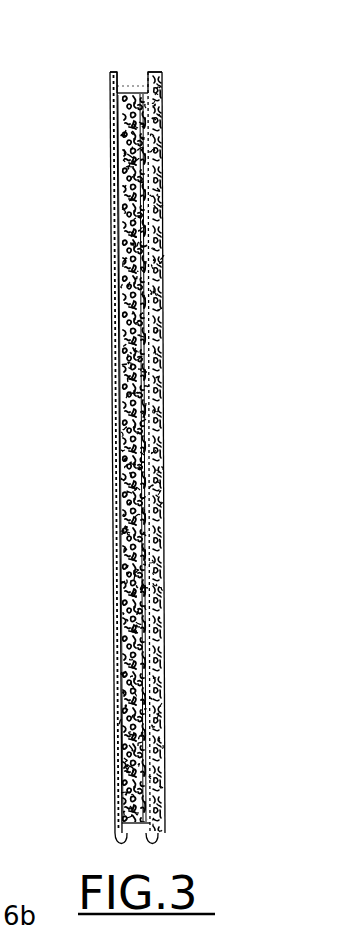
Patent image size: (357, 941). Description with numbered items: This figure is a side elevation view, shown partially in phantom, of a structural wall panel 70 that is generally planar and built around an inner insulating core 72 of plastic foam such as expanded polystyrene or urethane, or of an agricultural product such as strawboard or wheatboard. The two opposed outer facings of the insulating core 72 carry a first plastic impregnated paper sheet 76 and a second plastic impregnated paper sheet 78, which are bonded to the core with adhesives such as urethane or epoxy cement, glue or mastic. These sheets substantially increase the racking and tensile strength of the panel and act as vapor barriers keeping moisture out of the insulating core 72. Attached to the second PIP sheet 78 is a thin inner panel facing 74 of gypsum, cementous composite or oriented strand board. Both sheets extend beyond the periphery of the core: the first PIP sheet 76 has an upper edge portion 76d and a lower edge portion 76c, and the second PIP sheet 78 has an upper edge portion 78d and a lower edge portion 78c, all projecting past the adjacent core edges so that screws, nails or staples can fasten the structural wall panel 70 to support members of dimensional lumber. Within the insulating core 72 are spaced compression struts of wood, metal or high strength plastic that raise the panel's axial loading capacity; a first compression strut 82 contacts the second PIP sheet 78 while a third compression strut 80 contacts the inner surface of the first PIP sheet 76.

The structural wall panel 70 is at (180, 92).
The insulating core 72 is at (133, 92).
The inner panel facing 74 is at (164, 802).
The first plastic impregnated paper sheet 76 is at (114, 660).
The lower edge portion of first PIP sheet 76c is at (116, 845).
The upper edge portion of first PIP sheet 76d is at (117, 85).
The second plastic impregnated paper sheet 78 is at (160, 655).
The lower edge portion of second PIP sheet 78c is at (158, 845).
The upper edge portion of second PIP sheet 78d is at (147, 90).
The third compression strut 80 is at (118, 437).
The first compression strut 82 is at (152, 255).